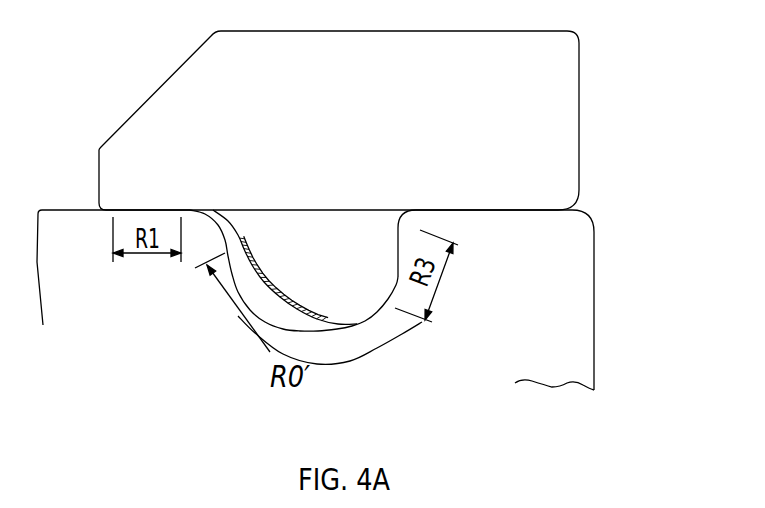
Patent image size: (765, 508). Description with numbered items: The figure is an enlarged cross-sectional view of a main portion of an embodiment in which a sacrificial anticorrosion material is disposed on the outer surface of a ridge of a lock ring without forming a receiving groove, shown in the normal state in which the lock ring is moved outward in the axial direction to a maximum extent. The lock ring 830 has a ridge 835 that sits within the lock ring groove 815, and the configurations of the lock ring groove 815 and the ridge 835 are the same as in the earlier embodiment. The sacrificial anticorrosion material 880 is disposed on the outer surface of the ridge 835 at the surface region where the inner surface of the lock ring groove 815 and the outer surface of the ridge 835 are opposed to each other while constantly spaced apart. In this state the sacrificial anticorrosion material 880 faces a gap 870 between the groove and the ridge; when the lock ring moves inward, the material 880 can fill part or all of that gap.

The lock ring 830 is at (582, 80).
The ridge 835 is at (368, 262).
The gap 870 is at (245, 282).
The sacrificial anticorrosion material 880 is at (268, 293).
The lock ring groove 815 is at (371, 311).